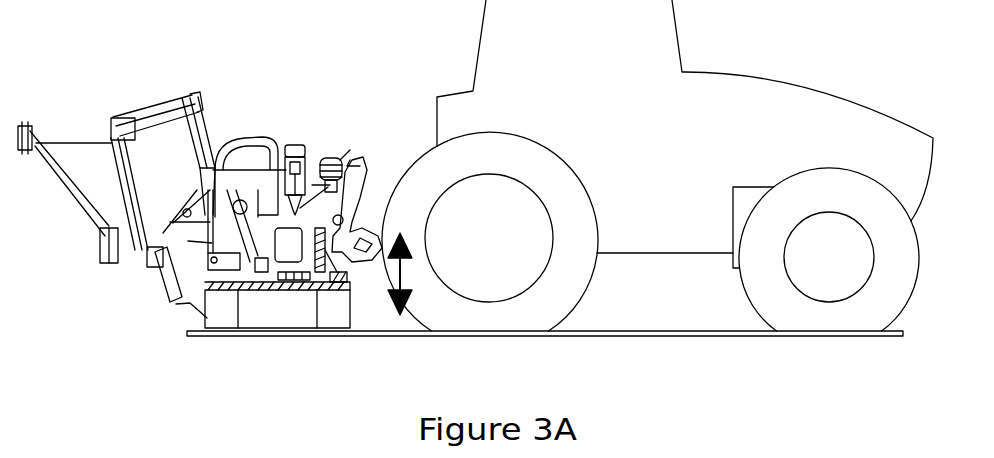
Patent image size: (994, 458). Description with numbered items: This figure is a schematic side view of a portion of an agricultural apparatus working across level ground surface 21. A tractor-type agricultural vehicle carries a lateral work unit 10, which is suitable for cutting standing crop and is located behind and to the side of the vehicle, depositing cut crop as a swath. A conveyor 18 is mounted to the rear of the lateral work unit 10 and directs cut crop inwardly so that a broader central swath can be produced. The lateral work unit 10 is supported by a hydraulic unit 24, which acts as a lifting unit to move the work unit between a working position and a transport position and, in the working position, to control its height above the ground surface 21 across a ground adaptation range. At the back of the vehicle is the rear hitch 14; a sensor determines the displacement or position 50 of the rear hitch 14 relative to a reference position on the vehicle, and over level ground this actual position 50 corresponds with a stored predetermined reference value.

The lateral work unit 10 is at (227, 316).
The rear hitch 14 is at (373, 232).
The conveyor 18 is at (163, 147).
The ground surface 21 is at (683, 337).
The hydraulic unit 24 is at (298, 145).
The position of the rear hitch 50 is at (395, 277).